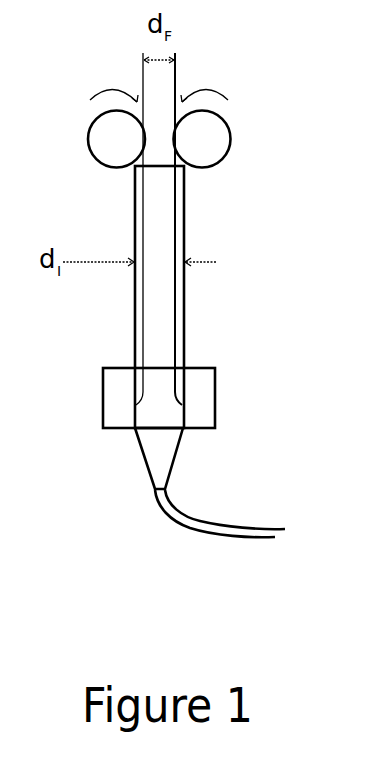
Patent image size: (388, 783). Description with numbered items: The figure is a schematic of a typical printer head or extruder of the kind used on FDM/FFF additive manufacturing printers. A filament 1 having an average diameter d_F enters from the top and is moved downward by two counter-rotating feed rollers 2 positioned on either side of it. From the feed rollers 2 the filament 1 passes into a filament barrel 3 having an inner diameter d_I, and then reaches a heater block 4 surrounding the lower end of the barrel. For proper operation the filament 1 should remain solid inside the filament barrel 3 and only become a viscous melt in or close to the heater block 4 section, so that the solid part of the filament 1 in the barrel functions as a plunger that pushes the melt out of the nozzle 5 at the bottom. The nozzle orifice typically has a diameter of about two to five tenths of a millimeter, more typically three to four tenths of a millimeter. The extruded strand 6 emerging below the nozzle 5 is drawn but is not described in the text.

The filament 1 is at (162, 80).
The feed rollers 2 is at (231, 138).
The filament barrel 3 is at (186, 238).
The heater block 4 is at (102, 390).
The nozzle 5 is at (143, 455).
The extruded strand 6 is at (207, 519).